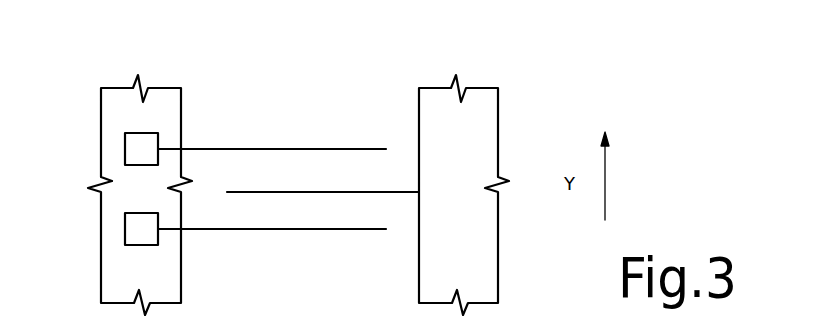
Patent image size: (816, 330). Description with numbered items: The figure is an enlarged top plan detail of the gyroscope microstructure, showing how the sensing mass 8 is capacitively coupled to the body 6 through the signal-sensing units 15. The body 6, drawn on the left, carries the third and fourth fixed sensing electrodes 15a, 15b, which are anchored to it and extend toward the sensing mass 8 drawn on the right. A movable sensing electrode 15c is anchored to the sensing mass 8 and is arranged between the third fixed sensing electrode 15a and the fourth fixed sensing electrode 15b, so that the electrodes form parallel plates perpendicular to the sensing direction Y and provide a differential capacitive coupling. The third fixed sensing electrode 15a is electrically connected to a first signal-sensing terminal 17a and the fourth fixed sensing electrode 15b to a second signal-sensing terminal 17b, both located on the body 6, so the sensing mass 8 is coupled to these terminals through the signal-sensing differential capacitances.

The body 6 is at (108, 294).
The sensing mass 8 is at (493, 127).
The signal-sensing units 15 is at (288, 168).
The third fixed sensing electrode 15a is at (242, 148).
The fourth fixed sensing electrode 15b is at (224, 232).
The movable sensing electrode 15c is at (391, 195).
The first signal-sensing terminal 17a is at (123, 149).
The second signal-sensing terminal 17b is at (123, 229).